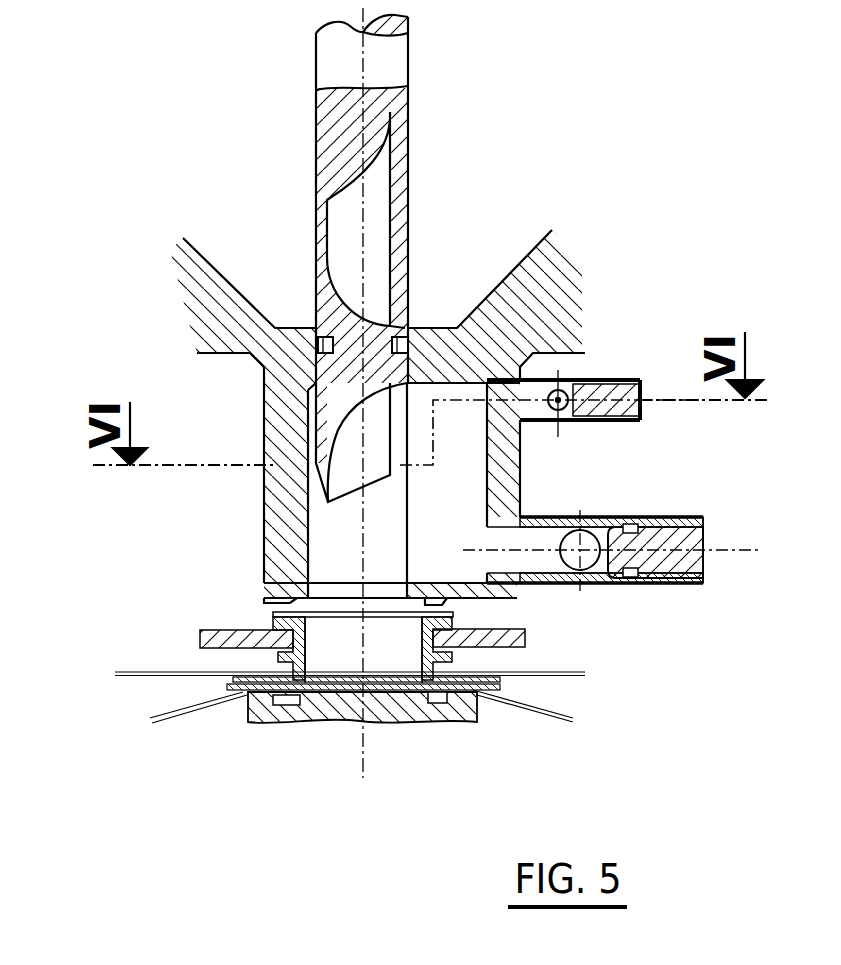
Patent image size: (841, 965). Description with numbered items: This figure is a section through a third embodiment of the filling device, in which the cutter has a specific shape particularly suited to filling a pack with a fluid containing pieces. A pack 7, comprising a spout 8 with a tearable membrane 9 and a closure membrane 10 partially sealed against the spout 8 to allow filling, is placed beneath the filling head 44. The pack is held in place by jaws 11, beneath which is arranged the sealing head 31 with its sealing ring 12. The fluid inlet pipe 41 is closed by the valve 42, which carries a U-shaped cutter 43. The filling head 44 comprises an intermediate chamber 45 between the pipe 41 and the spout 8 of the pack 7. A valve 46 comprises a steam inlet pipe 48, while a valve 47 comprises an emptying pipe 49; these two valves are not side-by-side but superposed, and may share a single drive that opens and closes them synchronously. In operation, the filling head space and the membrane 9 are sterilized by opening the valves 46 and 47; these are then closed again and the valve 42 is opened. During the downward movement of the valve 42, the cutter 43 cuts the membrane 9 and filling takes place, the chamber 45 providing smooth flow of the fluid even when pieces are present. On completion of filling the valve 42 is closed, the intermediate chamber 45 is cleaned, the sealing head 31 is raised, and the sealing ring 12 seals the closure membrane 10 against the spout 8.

The pack 7 is at (569, 713).
The spout 8 is at (459, 661).
The tearable membrane 9 is at (333, 613).
The closure membrane 10 is at (397, 683).
The jaws 11 is at (528, 640).
The sealing ring 12 is at (442, 700).
The sealing head 31 is at (277, 712).
The fluid inlet pipe 41 is at (446, 415).
The valve 42 is at (409, 70).
The U-shaped cutter 43 is at (373, 485).
The filling head 44 is at (542, 311).
The intermediate chamber 45 is at (550, 440).
The valve 46 is at (627, 393).
The valve 47 is at (698, 545).
The steam inlet pipe 48 is at (566, 410).
The emptying pipe 49 is at (581, 549).